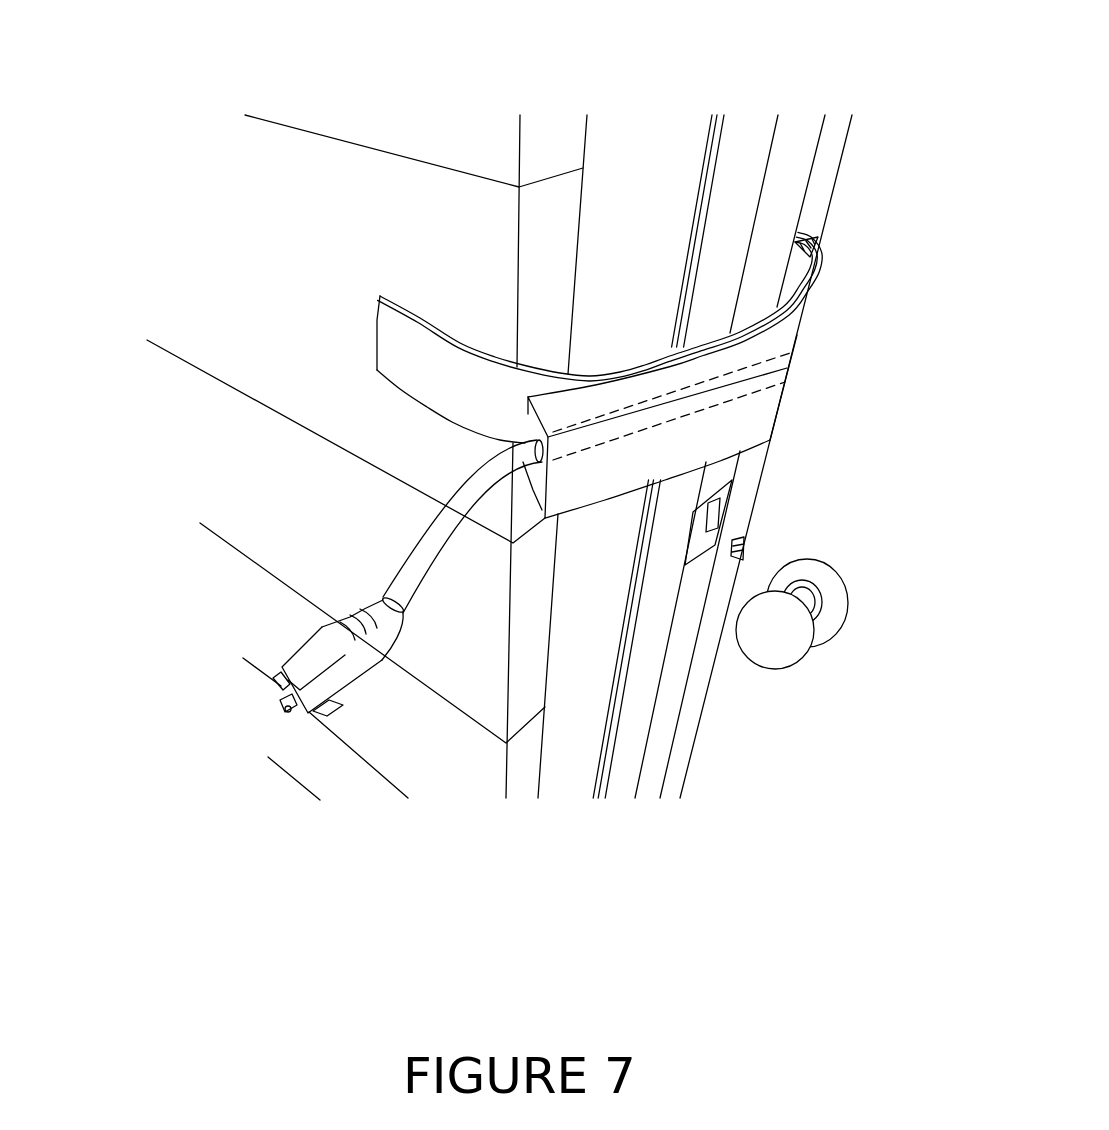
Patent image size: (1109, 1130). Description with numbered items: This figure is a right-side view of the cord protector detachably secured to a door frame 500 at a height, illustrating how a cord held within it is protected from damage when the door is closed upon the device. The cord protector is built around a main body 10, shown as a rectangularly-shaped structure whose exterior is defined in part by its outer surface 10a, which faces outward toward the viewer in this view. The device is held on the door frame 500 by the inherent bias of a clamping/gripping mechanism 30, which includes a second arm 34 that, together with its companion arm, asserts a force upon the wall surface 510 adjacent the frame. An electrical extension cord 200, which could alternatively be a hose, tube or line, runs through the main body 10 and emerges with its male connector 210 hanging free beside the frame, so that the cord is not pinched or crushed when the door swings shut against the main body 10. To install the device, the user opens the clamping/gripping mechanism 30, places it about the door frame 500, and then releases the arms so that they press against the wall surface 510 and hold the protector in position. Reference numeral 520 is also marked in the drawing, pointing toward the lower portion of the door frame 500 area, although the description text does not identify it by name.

The main body 10 is at (599, 286).
The outer surface 10a is at (668, 366).
The clamping/gripping mechanism 30 is at (542, 353).
The second arm 34 is at (453, 377).
The electrical extension cord 200 is at (442, 523).
The male connector 210 is at (350, 678).
The door frame 500 is at (746, 100).
The wall surface 510 is at (249, 276).
The door frame 520 is at (722, 815).